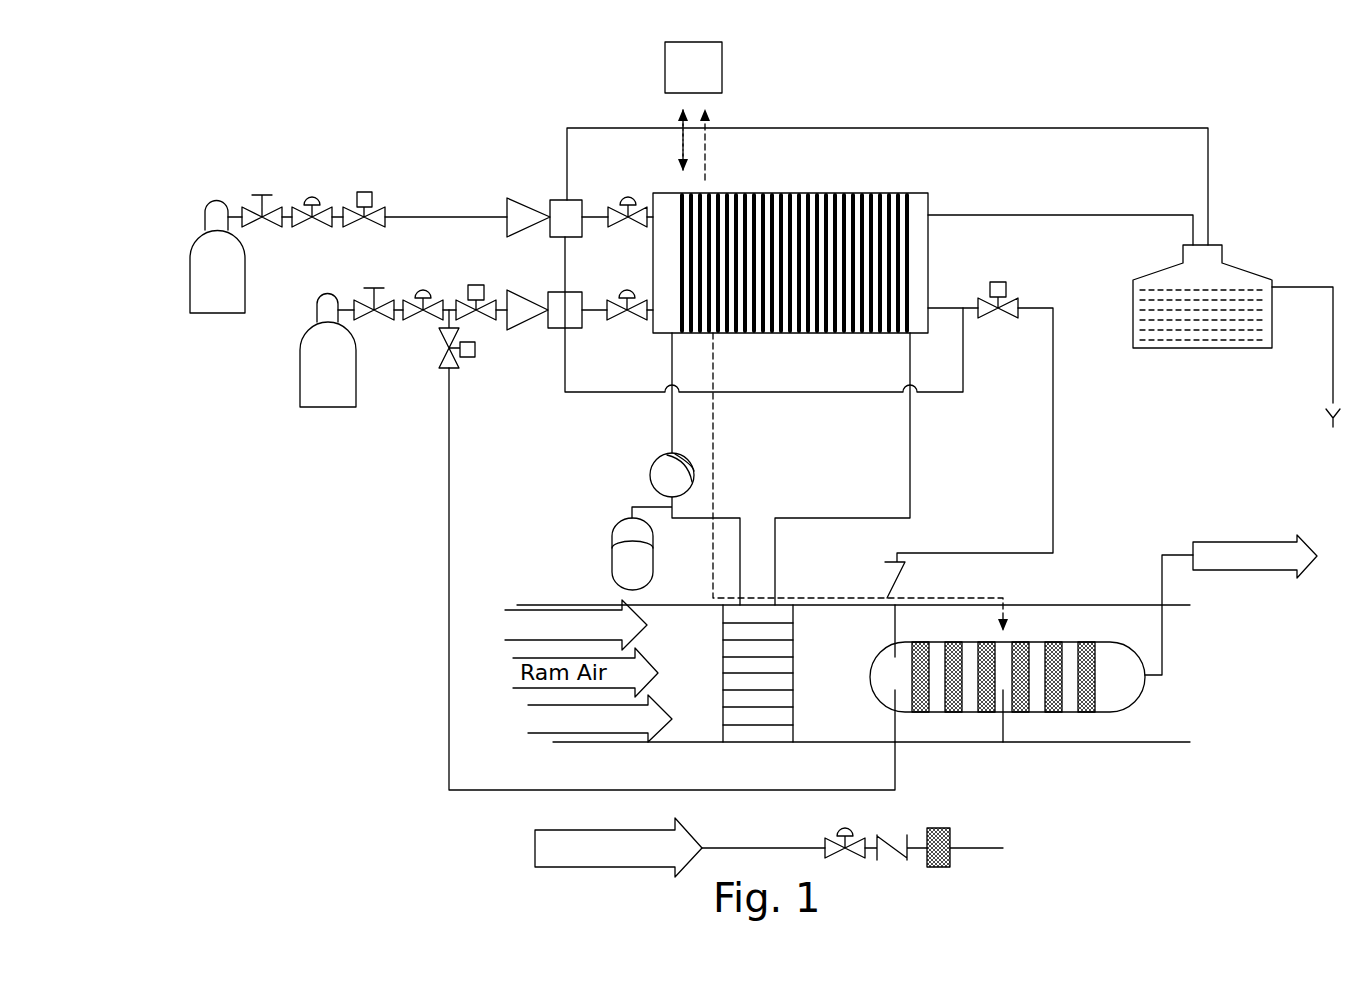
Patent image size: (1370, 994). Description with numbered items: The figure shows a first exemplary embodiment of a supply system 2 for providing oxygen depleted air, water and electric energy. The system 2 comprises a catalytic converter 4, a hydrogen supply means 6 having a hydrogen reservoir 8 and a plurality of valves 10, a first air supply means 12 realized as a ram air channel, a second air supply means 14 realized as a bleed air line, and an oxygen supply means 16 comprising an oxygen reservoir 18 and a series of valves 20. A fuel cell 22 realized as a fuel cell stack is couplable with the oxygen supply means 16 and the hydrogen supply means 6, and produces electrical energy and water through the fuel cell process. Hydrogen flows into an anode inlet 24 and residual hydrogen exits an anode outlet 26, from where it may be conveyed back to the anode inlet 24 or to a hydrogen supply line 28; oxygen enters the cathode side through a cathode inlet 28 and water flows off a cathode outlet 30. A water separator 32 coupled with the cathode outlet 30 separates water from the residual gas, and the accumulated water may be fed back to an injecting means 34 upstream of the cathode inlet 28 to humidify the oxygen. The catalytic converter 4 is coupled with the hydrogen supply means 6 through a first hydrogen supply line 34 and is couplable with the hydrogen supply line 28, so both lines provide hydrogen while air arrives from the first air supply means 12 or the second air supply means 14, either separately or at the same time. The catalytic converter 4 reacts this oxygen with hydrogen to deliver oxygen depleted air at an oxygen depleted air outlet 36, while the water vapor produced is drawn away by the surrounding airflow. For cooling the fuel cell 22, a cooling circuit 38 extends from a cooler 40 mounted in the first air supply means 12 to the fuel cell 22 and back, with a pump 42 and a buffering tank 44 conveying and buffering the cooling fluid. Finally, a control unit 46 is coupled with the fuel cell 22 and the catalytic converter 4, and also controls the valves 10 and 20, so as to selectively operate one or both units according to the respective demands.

The supply system 2 is at (978, 106).
The catalytic converter 4 is at (1093, 638).
The hydrogen supply means 6 is at (399, 442).
The hydrogen reservoir 8 is at (313, 373).
The plurality of valves 10 is at (401, 333).
The first air supply means 12 is at (528, 764).
The second air supply means 14 is at (898, 857).
The oxygen supply means 16 is at (288, 190).
The oxygen reservoir 18 is at (200, 280).
The series of valves 20 is at (326, 188).
The fuel cell 22 is at (846, 193).
The anode inlet 24 is at (645, 322).
The anode outlet 26 is at (936, 300).
The hydrogen supply line 28 is at (649, 190).
The cathode outlet 30 is at (936, 212).
The water separator 32 is at (1240, 270).
The first hydrogen supply line 34 is at (562, 203).
The oxygen depleted air outlet 36 is at (1148, 685).
The cooling circuit 38 is at (926, 442).
The cooler 40 is at (793, 670).
The pump 42 is at (651, 470).
The buffering tank 44 is at (612, 556).
The control unit 46 is at (710, 68).